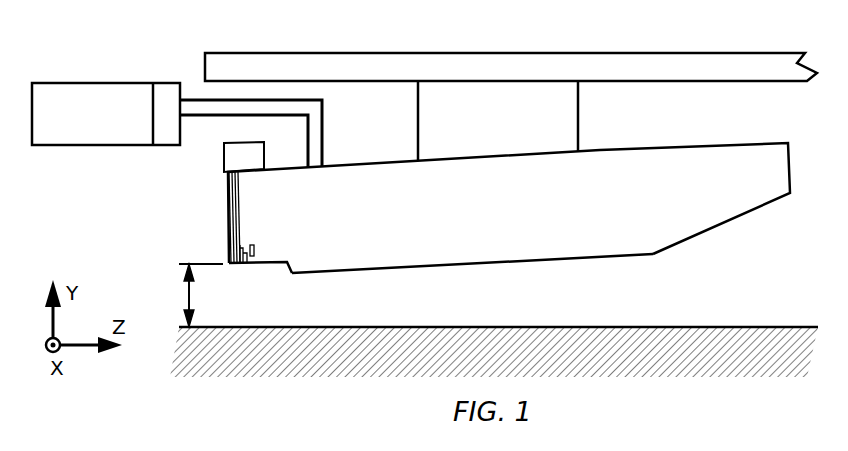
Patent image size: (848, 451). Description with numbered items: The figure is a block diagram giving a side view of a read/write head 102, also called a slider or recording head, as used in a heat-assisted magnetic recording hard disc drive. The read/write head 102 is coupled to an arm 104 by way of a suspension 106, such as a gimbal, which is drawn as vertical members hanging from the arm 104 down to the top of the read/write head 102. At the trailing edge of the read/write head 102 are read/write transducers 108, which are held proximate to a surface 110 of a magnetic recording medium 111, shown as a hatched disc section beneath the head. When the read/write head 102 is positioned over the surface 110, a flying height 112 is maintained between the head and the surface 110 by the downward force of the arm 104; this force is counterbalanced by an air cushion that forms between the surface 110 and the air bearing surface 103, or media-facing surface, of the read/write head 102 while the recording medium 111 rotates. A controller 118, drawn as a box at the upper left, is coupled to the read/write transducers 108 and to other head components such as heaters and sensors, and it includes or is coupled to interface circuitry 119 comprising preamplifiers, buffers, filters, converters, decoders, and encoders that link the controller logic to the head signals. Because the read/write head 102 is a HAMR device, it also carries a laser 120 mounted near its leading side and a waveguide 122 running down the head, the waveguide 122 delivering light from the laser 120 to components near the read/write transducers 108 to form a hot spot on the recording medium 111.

The read/write head 102 is at (695, 152).
The air bearing surface 103 is at (378, 272).
The arm 104 is at (742, 60).
The suspension 106 is at (578, 113).
The read/write transducers 108 is at (240, 248).
The surface 110 is at (697, 327).
The magnetic recording medium 111 is at (710, 363).
The flying height 112 is at (185, 295).
The controller 118 is at (87, 83).
The interface circuitry 119 is at (163, 83).
The laser 120 is at (245, 150).
The waveguide 122 is at (230, 190).